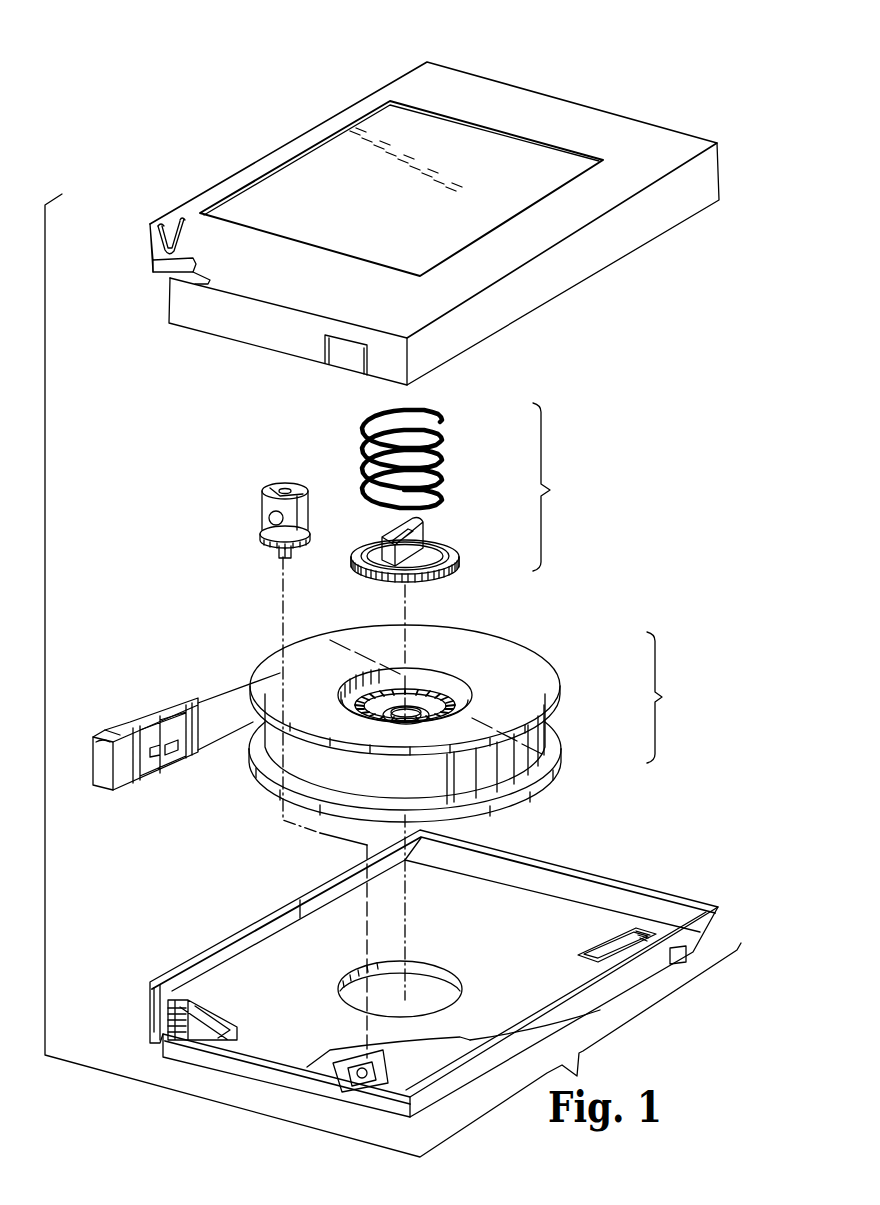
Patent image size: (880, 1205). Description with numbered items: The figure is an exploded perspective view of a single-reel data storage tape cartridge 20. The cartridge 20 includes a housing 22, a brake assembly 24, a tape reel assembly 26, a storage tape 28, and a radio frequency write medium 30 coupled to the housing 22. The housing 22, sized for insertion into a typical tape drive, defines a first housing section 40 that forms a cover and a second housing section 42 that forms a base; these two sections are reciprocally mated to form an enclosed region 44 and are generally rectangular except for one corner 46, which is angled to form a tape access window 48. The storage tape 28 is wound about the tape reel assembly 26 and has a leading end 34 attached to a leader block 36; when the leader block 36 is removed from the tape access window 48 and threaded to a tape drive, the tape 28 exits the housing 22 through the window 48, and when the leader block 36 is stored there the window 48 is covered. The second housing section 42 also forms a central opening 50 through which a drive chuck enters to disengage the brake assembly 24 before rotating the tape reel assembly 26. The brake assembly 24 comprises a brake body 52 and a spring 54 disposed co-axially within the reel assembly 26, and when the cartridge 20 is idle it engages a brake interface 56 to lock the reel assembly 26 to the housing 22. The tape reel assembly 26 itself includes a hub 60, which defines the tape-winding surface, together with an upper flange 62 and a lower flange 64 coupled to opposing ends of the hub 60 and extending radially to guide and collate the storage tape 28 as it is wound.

The data storage tape cartridge 20 is at (415, 584).
The housing 22 is at (415, 605).
The brake assembly 24 is at (420, 492).
The tape reel assembly 26 is at (471, 710).
The storage tape 28 is at (223, 700).
The radio frequency write medium 30 is at (606, 930).
The leading end 34 is at (210, 720).
The leader block 36 is at (151, 719).
The first housing section 40 is at (399, 219).
The second housing section 42 is at (395, 966).
The enclosed region 44 is at (493, 902).
The corner 46 is at (150, 250).
The tape access window 48 is at (145, 1017).
The central opening 50 is at (427, 962).
The brake body 52 is at (460, 560).
The spring 54 is at (442, 453).
The brake interface 56 is at (373, 697).
The hub 60 is at (448, 680).
The upper flange 62 is at (540, 684).
The lower flange 64 is at (548, 736).